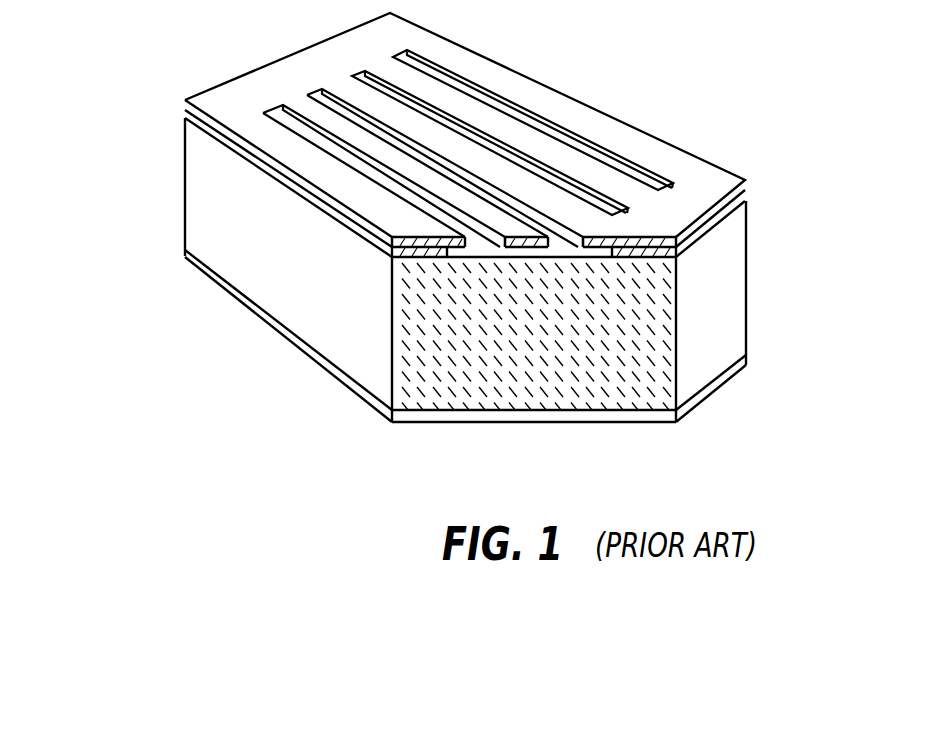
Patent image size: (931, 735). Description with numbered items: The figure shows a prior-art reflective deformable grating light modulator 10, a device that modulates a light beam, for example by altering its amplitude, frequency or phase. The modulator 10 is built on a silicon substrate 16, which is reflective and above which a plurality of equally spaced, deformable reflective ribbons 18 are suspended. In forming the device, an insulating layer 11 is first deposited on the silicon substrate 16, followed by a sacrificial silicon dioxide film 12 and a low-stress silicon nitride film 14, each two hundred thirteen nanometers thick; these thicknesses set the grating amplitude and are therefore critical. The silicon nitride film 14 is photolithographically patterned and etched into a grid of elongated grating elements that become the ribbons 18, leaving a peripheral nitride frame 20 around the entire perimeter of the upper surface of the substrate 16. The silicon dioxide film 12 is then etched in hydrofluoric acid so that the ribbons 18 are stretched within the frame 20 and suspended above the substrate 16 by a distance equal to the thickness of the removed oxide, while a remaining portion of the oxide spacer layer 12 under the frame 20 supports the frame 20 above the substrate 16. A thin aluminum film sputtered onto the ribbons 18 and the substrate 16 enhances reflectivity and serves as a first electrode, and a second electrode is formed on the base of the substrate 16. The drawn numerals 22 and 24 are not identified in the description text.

The reflective deformable grating light modulator 10 is at (118, 120).
The insulating layer 11 is at (747, 205).
The sacrificial silicon dioxide film 12 is at (740, 178).
The low-stress silicon nitride film 14 is at (350, 228).
The silicon substrate 16 is at (719, 327).
The deformable reflective ribbons 18 is at (306, 103).
The nitride frame 20 is at (565, 113).
The electrode layer 22 is at (282, 182).
The bottom layer 24 is at (575, 423).